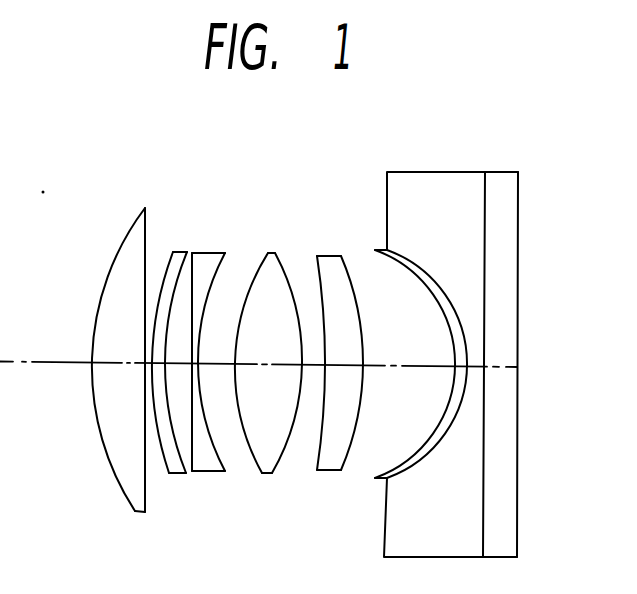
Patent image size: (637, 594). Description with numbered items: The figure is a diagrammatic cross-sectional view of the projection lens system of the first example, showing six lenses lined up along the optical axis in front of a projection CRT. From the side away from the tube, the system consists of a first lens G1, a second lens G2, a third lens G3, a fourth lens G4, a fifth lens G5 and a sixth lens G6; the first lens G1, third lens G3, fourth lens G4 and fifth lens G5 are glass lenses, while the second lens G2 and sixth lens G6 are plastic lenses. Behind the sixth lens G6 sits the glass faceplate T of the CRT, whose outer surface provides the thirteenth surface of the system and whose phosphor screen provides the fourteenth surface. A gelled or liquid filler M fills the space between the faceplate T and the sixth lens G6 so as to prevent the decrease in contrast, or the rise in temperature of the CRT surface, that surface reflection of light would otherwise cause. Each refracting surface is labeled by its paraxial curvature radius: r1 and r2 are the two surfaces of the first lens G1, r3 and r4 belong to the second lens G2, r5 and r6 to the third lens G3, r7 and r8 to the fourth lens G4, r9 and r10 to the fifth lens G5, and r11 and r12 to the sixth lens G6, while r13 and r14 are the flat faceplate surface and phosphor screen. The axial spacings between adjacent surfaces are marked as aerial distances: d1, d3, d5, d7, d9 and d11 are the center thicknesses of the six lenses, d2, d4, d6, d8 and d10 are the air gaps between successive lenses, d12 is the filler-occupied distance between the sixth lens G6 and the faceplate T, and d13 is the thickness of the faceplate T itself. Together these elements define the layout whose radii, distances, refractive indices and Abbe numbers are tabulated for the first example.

The first lens G1 is at (128, 364).
The second lens G2 is at (177, 357).
The third lens G3 is at (217, 364).
The fourth lens G4 is at (268, 364).
The fifth lens G5 is at (330, 364).
The sixth lens G6 is at (410, 318).
The gelled or liquid filler M is at (435, 177).
The glass faceplate T is at (529, 334).
The paraxial curvature radius of the first surface r1 is at (133, 502).
The paraxial curvature radius of the second surface r2 is at (149, 497).
The paraxial curvature radius of the third surface r3 is at (169, 474).
The paraxial curvature radius of the fourth surface r4 is at (188, 474).
The paraxial curvature radius of the fifth surface r5 is at (192, 472).
The paraxial curvature radius of the sixth surface r6 is at (225, 472).
The paraxial curvature radius of the seventh surface r7 is at (257, 462).
The paraxial curvature radius of the eighth surface r8 is at (281, 460).
The paraxial curvature radius of the ninth surface r9 is at (316, 460).
The paraxial curvature radius of the tenth surface r10 is at (346, 460).
The paraxial curvature radius of the eleventh surface r11 is at (382, 471).
The paraxial curvature radius of the twelfth surface r12 is at (444, 436).
The paraxial curvature radius of the thirteenth surface r13 is at (483, 483).
The paraxial curvature radius of the fourteenth surface r14 is at (517, 452).
The aerial distance between first and second surfaces d1 is at (107, 362).
The aerial distance between second and third surfaces d2 is at (148, 364).
The aerial distance between third and fourth surfaces d3 is at (156, 362).
The aerial distance between fourth and fifth surfaces d4 is at (173, 364).
The aerial distance between fifth and sixth surfaces d5 is at (197, 362).
The aerial distance between sixth and seventh surfaces d6 is at (213, 363).
The aerial distance between seventh and eighth surfaces d7 is at (276, 363).
The aerial distance between eighth and ninth surfaces d8 is at (312, 364).
The aerial distance between ninth and tenth surfaces d9 is at (342, 364).
The aerial distance between tenth and eleventh surfaces d10 is at (413, 364).
The aerial distance between eleventh and twelfth surfaces d11 is at (460, 366).
The aerial distance between twelfth and thirteenth surfaces d12 is at (473, 366).
The aerial distance between thirteenth and fourteenth surfaces d13 is at (509, 367).